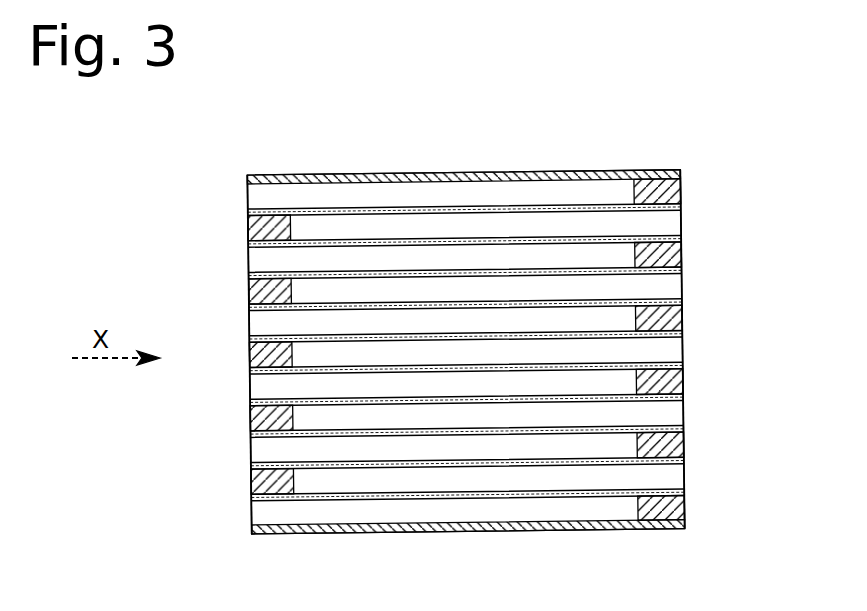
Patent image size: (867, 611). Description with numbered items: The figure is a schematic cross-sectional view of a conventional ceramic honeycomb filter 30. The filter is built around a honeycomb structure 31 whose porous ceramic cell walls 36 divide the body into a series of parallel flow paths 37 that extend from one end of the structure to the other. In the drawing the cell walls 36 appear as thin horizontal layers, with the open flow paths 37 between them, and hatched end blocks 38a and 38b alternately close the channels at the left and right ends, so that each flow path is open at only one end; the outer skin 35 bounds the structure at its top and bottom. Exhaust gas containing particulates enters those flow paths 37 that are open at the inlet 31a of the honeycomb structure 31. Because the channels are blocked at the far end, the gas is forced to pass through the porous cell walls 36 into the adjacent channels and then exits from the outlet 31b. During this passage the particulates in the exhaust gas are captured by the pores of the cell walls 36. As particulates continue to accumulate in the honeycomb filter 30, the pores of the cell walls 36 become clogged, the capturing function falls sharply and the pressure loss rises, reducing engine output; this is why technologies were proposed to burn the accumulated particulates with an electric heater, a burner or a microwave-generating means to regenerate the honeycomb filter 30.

The ceramic honeycomb filter 30 is at (211, 171).
The honeycomb structure 31 is at (437, 164).
The inlet 31a is at (250, 453).
The outlet 31b is at (685, 415).
The upper surface plate 35 is at (533, 172).
The cell walls 36 is at (300, 272).
The flow paths 37 is at (265, 325).
The left spacer 38a is at (262, 357).
The right spacer 38b is at (673, 378).